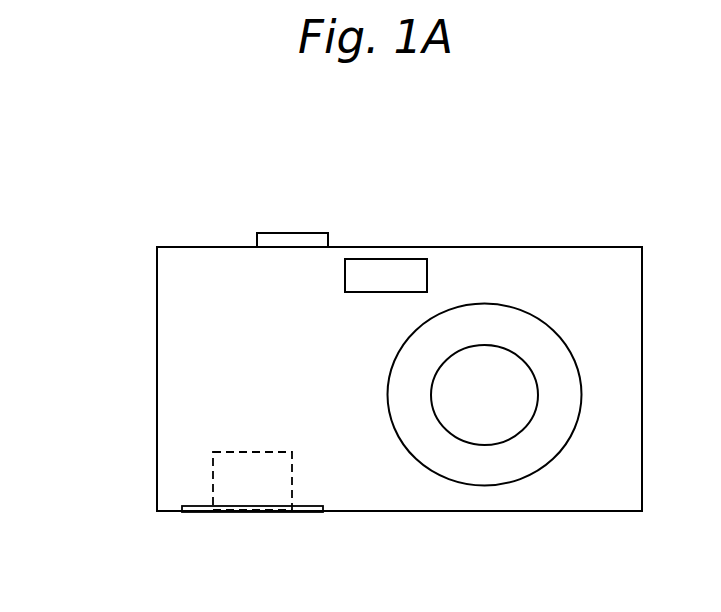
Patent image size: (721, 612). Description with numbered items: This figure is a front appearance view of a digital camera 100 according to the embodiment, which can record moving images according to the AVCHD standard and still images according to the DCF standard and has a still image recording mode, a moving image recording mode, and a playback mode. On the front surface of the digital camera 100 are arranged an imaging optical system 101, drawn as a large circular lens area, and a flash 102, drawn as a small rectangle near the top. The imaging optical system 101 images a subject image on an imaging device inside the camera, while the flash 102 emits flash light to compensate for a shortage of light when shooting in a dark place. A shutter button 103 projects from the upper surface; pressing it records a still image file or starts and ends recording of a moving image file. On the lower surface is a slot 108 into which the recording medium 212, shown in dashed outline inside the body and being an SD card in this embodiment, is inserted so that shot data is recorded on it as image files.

The digital camera 100 is at (521, 229).
The imaging optical system 101 is at (552, 397).
The flash 102 is at (383, 258).
The shutter button 103 is at (289, 232).
The slot 108 is at (265, 511).
The recording medium 212 is at (292, 473).